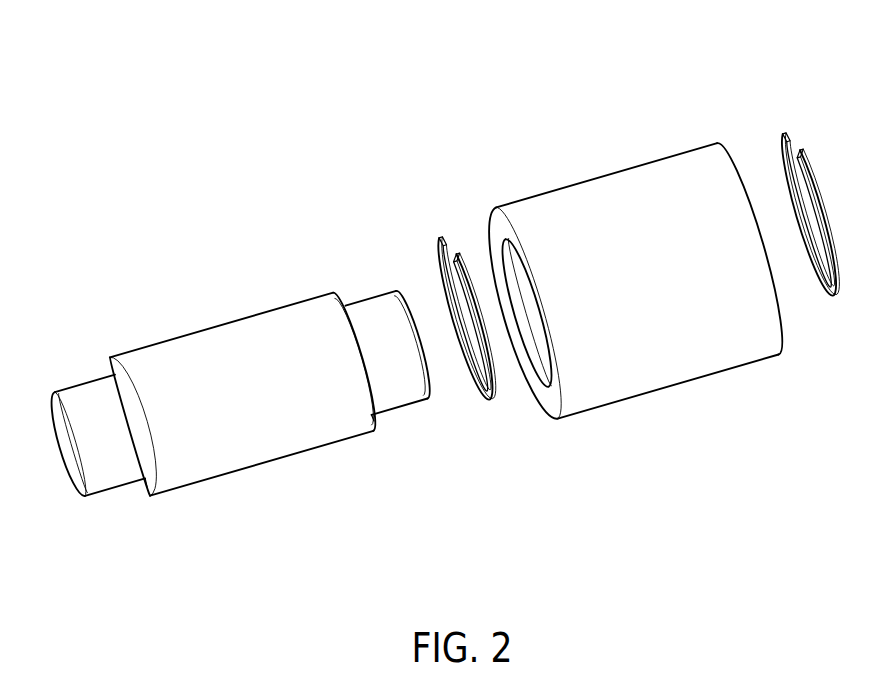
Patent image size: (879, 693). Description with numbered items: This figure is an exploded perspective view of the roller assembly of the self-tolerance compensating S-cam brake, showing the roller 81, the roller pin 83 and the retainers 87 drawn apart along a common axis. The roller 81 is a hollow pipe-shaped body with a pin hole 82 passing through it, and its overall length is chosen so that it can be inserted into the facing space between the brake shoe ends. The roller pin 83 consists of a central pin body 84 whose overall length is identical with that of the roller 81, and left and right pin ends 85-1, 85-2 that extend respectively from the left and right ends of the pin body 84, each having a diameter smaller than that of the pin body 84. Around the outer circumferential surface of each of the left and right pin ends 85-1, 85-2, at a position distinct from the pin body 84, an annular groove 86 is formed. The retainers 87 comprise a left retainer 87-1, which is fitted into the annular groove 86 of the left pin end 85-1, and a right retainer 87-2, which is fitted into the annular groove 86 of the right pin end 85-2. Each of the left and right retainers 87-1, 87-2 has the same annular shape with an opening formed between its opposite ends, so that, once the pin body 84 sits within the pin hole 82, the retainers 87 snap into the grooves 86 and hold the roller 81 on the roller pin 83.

The roller 81 is at (672, 340).
The pin hole 82 is at (536, 378).
The roller pin 83 is at (342, 165).
The pin body 84 is at (233, 362).
The left pin end 85-1 is at (90, 395).
The right pin end 85-2 is at (390, 325).
The annular groove 86 is at (140, 482).
The retainers 87 is at (503, 92).
The left retainer 87-1 is at (443, 235).
The right retainer 87-2 is at (785, 135).